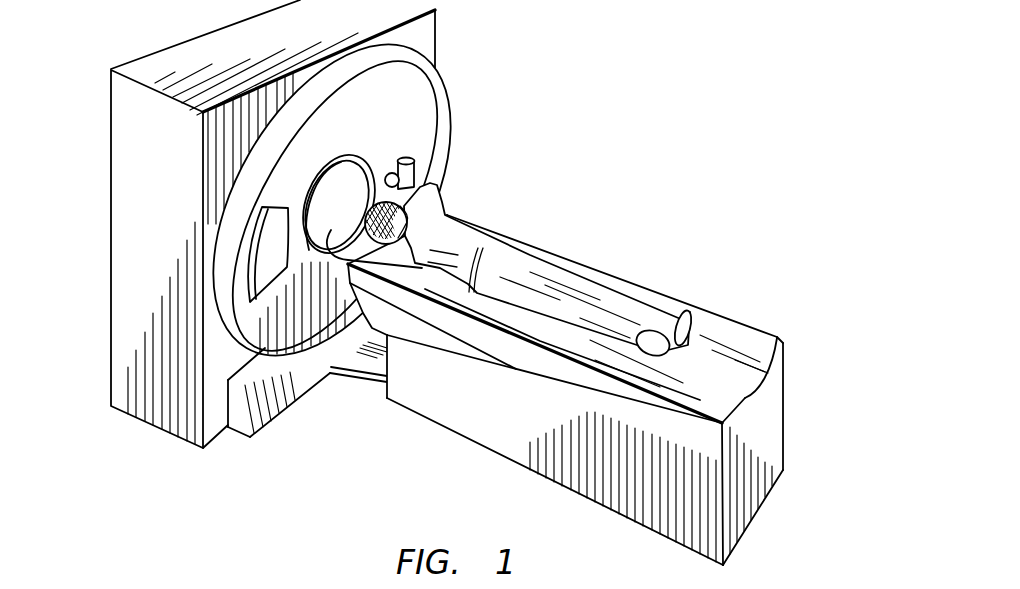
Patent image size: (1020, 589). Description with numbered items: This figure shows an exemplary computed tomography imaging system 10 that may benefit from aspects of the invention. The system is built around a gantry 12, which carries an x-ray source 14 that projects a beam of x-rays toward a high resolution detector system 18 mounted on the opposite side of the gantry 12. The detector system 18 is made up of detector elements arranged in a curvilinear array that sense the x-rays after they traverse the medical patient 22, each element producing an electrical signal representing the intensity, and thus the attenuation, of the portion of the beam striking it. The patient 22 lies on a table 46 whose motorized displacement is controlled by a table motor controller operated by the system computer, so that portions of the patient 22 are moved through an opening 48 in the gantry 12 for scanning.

The computed tomography imaging system 10 is at (550, 68).
The gantry 12 is at (384, 118).
The x-ray source 14 is at (416, 160).
The high resolution detector system 18 is at (270, 263).
The medical patient 22 is at (463, 237).
The table 46 is at (482, 447).
The opening 48 is at (328, 195).